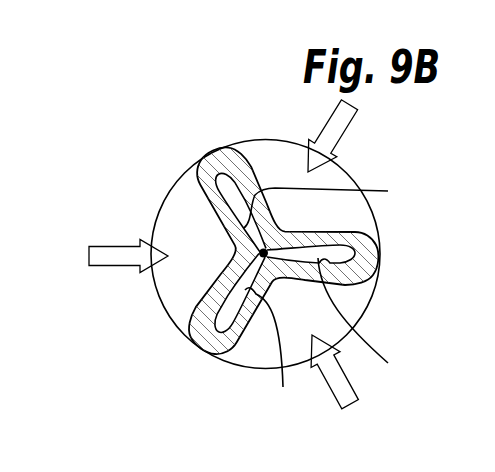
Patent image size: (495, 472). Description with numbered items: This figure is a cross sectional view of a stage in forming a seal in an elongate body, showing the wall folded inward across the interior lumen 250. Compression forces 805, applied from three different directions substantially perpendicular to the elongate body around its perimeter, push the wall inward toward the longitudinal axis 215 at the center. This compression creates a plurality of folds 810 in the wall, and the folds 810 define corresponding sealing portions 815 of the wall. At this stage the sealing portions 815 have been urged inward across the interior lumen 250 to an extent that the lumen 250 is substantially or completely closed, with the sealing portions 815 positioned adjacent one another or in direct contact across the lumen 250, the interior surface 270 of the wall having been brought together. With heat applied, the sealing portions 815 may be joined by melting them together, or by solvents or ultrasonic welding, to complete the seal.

The longitudinal axis 215 is at (260, 251).
The lumen 250 is at (186, 170).
The interior surface 270 is at (223, 318).
The compression forces 805 is at (98, 258).
The folds 810 is at (212, 163).
The sealing portions 815 is at (333, 298).